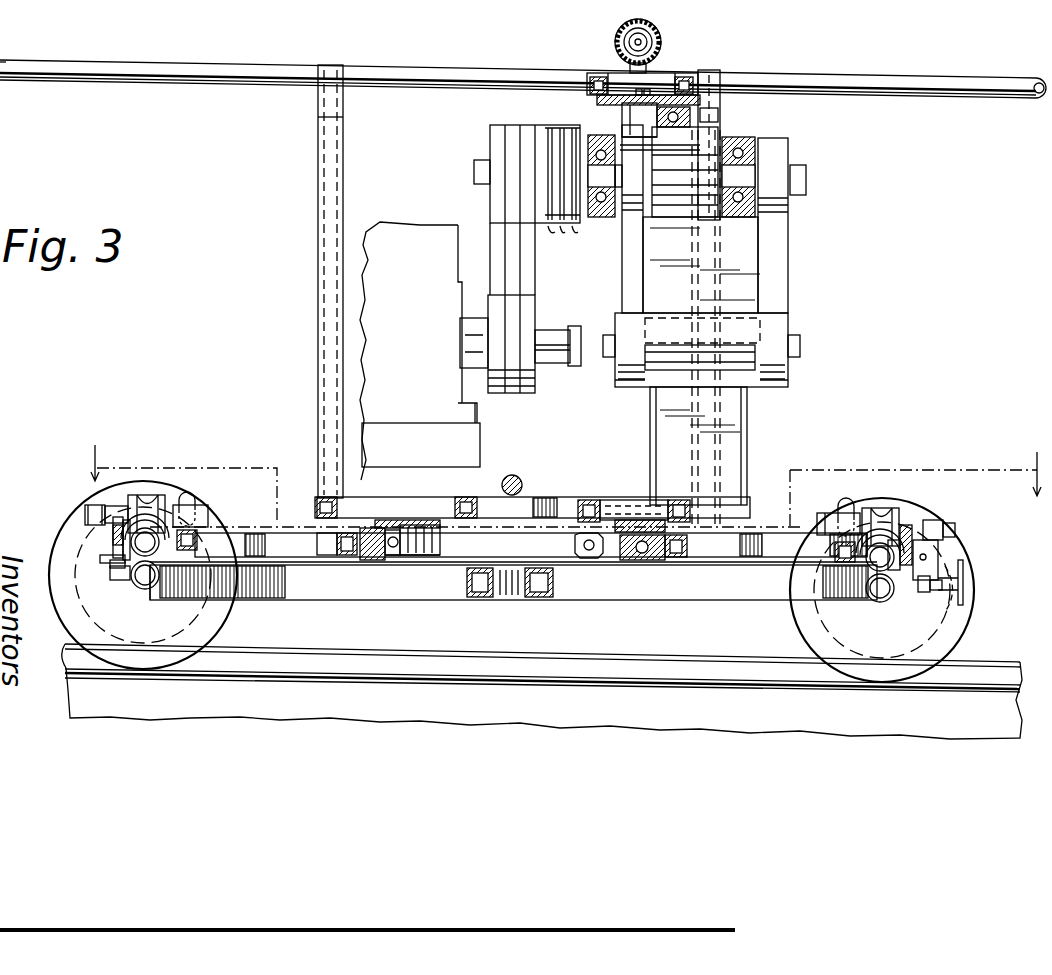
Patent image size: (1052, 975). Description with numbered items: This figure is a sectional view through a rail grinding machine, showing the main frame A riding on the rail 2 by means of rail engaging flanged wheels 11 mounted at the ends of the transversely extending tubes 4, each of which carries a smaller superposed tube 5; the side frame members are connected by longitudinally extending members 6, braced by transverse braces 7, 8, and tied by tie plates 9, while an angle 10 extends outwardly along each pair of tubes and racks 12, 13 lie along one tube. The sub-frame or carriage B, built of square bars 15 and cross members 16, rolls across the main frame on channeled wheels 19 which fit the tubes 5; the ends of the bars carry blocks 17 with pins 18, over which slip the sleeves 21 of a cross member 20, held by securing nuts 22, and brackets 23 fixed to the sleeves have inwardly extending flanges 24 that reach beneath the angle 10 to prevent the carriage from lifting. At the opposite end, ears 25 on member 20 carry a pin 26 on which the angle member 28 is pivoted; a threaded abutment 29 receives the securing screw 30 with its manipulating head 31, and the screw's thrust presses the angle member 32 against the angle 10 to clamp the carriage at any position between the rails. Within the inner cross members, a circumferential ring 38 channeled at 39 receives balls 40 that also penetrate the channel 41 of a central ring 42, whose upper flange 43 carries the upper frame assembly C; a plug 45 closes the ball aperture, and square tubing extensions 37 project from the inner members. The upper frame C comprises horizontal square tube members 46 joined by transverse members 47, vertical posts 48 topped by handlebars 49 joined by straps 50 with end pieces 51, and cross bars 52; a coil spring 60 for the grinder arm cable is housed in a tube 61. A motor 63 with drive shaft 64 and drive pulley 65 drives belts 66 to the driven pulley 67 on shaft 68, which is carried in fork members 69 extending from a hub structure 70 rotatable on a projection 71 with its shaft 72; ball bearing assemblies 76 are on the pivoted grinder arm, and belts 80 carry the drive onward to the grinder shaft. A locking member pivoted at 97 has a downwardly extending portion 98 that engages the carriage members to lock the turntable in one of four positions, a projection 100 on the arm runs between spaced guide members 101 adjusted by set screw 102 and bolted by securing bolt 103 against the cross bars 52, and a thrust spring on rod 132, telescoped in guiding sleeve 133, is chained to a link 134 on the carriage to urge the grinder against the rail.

The rail 2 is at (275, 700).
The transversely extending tube 4 is at (140, 590).
The smaller tube 5 is at (147, 530).
The longitudinally extending member 6 is at (272, 618).
The transversely extending brace 7 is at (460, 590).
The transversely extending brace 8 is at (478, 598).
The tie plate 9 is at (248, 600).
The angle 10 is at (123, 550).
The rail engaging flanged wheel 11 is at (212, 622).
The rack 12 is at (645, 456).
The rack 13 is at (118, 580).
The square bar 15 is at (258, 535).
The cross member 16 is at (338, 542).
The block 17 is at (200, 507).
The pin 18 is at (86, 514).
The channeled wheel 19 is at (142, 495).
The cross member 20 is at (113, 540).
The sleeve 21 is at (112, 505).
The securing nut 22 is at (100, 506).
The securing bracket 23 is at (100, 560).
The inwardly extending flange 24 is at (115, 565).
The ear 25 is at (938, 550).
The pin or bolt 26 is at (928, 557).
The angle member 28 is at (926, 592).
The screw threaded abutment member 29 is at (950, 612).
The securing screw 30 is at (958, 585).
The manipulating head 31 is at (964, 566).
The angle member 32 is at (935, 592).
The square tubing extension 37 is at (328, 556).
The circumferential ring 38 is at (370, 560).
The channel 39 is at (378, 556).
The ball 40 is at (390, 530).
The channel 41 is at (393, 558).
The central ring 42 is at (424, 556).
The upper flange 43 is at (413, 520).
The plug 45 is at (589, 550).
The horizontal square tube member 46 is at (315, 510).
The transverse member 47 is at (540, 508).
The vertical post 48 is at (318, 172).
The handlebar 49 is at (236, 72).
The strap 50 is at (320, 85).
The connecting end piece 51 is at (11, 41).
The cross bar 52 is at (590, 78).
The coil spring 60 is at (625, 35).
The tube 61 is at (648, 30).
The motor 63 is at (408, 246).
The drive shaft 64 is at (548, 340).
The drive pulley 65 is at (538, 300).
The belt 66 is at (500, 275).
The driven pulley 67 is at (490, 135).
The shaft 68 is at (728, 176).
The fork member 69 is at (628, 265).
The hub structure 70 is at (622, 385).
The projection 71 is at (722, 390).
The shaft 72 is at (760, 322).
The ball bearing assembly 76 is at (600, 217).
The belt 80 is at (559, 240).
The pivot 97 is at (620, 510).
The downwardly extending portion 98 is at (628, 520).
The projection 100 is at (640, 90).
The spaced member 101 is at (625, 118).
The set screw 102 is at (720, 115).
The securing bolt 103 is at (648, 110).
The rod 132 is at (515, 478).
The guiding sleeve 133 is at (505, 480).
The link 134 is at (188, 497).
The main frame A is at (589, 606).
The sub-frame or carriage B is at (238, 511).
The upper frame assembly C is at (294, 257).